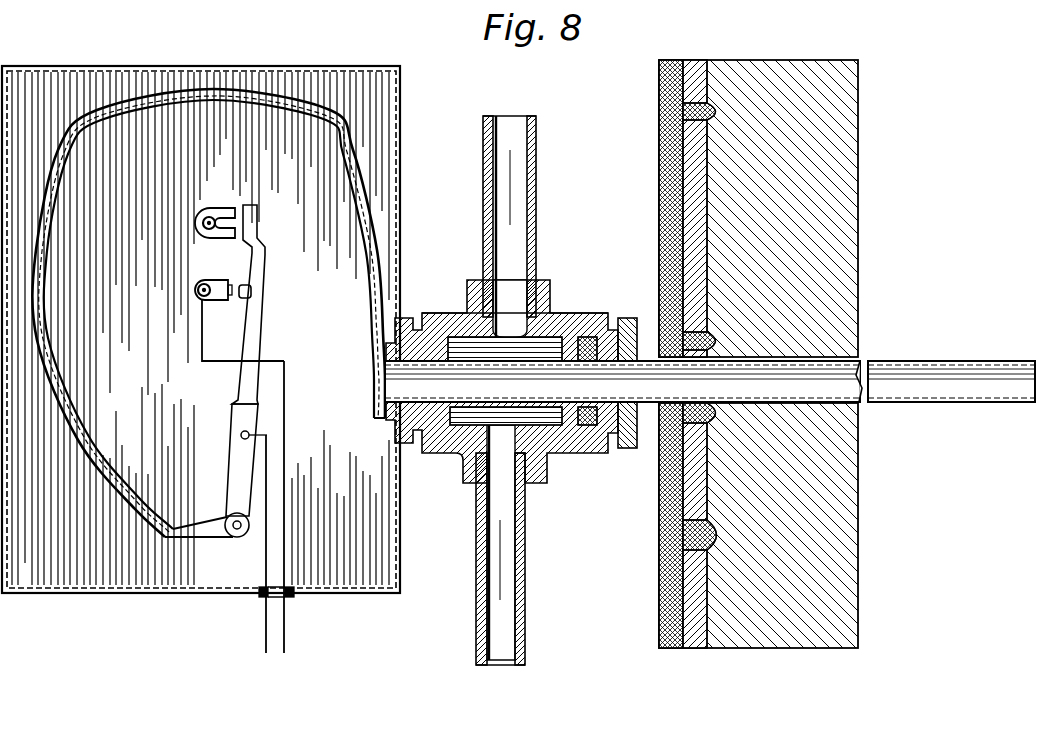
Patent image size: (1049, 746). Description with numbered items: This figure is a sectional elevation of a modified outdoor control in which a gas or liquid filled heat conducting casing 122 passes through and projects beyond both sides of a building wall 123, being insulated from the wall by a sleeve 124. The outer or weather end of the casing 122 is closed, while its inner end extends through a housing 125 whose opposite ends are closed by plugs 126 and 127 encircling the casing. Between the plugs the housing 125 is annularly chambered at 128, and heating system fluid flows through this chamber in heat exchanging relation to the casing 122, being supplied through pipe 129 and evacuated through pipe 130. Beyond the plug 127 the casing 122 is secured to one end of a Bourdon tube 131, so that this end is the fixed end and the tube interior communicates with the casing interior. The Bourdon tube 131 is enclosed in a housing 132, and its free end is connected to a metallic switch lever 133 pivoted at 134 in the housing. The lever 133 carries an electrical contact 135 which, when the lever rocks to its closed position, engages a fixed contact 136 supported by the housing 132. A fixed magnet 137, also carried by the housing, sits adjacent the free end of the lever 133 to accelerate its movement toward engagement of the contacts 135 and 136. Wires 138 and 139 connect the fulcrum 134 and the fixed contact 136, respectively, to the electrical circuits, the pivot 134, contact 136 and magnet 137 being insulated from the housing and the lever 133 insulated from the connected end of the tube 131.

The heat conducting casing 122 is at (912, 361).
The building wall 123 is at (862, 272).
The sleeve 124 is at (806, 355).
The housing 125 is at (576, 312).
The plug 126 is at (630, 318).
The plug 127 is at (408, 316).
The annular chamber 128 is at (548, 428).
The supply pipe 129 is at (538, 208).
The evacuation pipe 130 is at (527, 540).
The Bourdon tube 131 is at (360, 256).
The housing 132 is at (401, 174).
The switch lever 133 is at (234, 485).
The pivot 134 is at (241, 436).
The electrical contact 135 is at (244, 302).
The fixed contact 136 is at (232, 270).
The magnet 137 is at (208, 214).
The wire 138 is at (262, 545).
The wire 139 is at (286, 550).